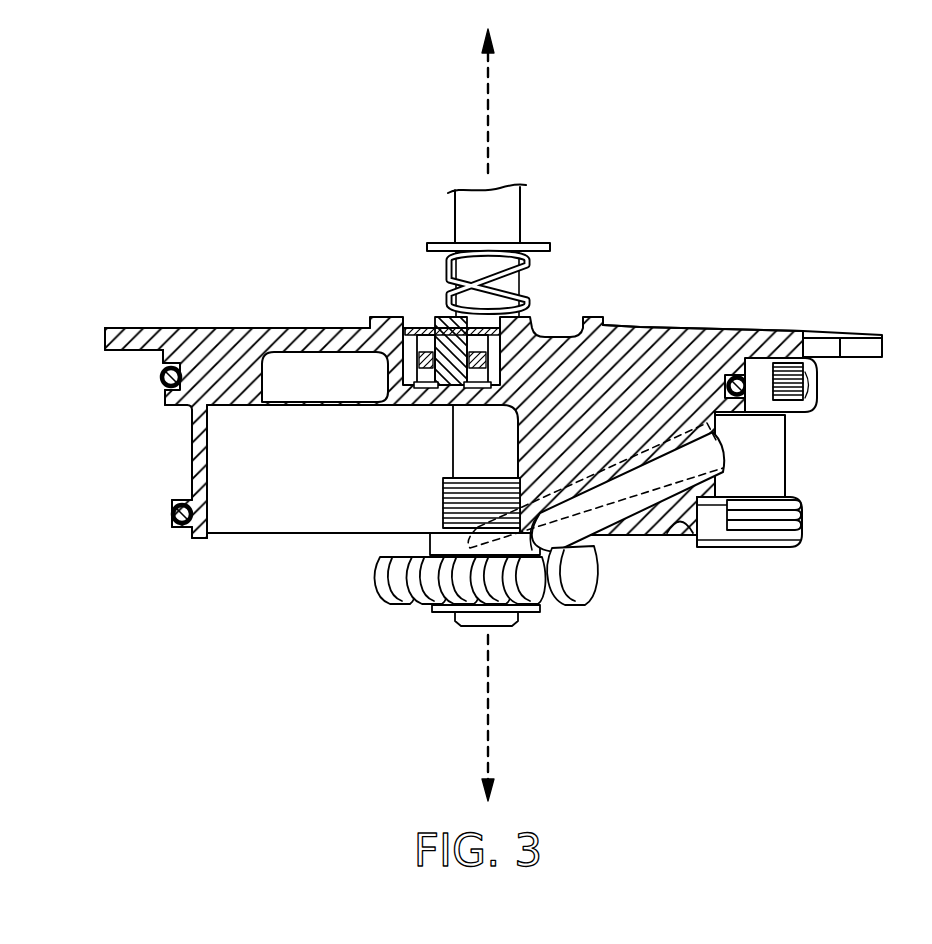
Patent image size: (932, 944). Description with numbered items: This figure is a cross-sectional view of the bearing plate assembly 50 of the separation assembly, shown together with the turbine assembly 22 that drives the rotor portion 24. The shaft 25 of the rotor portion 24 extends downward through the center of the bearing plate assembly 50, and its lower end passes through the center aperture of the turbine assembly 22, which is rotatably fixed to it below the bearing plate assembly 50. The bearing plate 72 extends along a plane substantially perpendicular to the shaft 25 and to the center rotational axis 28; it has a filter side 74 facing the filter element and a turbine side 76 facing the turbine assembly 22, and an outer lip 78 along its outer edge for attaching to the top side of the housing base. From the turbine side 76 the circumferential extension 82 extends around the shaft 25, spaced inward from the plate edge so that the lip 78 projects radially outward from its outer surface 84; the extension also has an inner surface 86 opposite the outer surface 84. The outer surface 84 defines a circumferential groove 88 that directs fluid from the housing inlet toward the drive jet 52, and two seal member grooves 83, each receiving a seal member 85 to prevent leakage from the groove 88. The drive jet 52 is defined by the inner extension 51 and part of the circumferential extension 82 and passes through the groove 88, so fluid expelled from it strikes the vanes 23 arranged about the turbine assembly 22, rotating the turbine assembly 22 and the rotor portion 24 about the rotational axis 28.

The center rotational axis 28 is at (486, 136).
The rotor portion 24 is at (527, 219).
The shaft 25 is at (455, 207).
The filter side 74 is at (156, 328).
The bearing plate 72 is at (665, 328).
The bearing plate assembly 50 is at (798, 324).
The turbine side 76 is at (115, 352).
The outer lip 78 is at (140, 352).
The outer surface 84 is at (190, 437).
The circumferential extension 82 is at (190, 470).
The inner surface 86 is at (208, 500).
The seal member 85 is at (818, 382).
The seal member grooves 83 is at (815, 400).
The circumferential groove 88 is at (783, 450).
The inner extension 51 is at (674, 517).
The drive jet 52 is at (617, 530).
The turbine assembly 22 is at (416, 631).
The vanes 23 is at (470, 601).